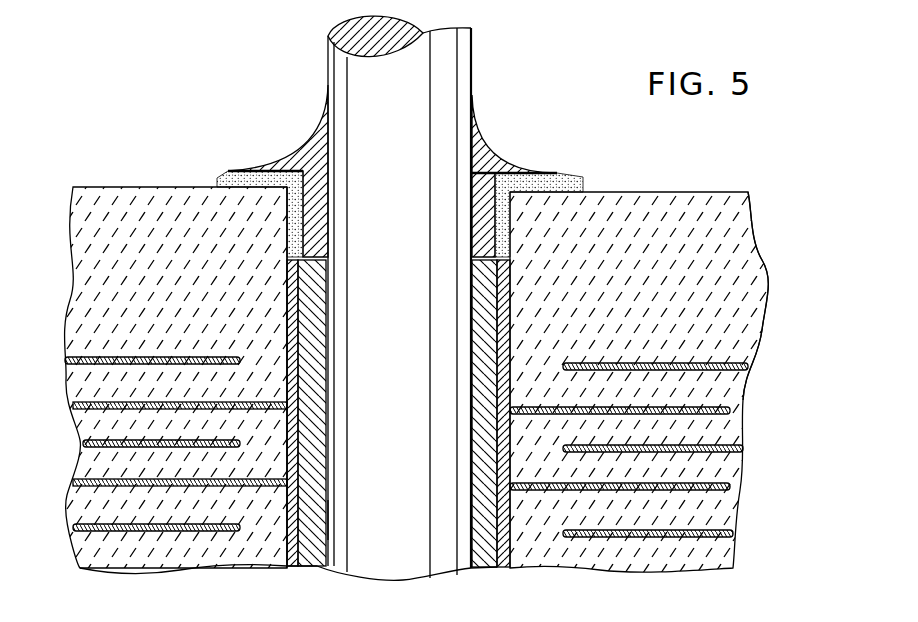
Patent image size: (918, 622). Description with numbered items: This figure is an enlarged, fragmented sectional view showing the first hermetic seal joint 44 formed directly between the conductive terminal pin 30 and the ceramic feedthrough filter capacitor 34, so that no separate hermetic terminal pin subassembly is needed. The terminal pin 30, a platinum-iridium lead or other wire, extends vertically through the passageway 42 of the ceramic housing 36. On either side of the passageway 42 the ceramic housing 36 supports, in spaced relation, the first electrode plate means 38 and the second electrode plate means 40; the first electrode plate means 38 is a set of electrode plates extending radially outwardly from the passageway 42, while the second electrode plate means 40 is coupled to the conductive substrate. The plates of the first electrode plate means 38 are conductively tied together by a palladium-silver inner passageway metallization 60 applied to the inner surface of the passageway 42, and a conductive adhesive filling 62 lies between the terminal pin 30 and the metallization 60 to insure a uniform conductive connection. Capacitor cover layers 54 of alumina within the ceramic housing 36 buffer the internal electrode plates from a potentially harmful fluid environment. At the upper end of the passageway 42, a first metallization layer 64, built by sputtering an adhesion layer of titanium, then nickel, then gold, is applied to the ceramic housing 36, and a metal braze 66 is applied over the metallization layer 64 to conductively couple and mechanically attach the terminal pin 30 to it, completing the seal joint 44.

The conductive terminal pin 30 is at (474, 47).
The ceramic feedthrough filter capacitor 34 is at (744, 189).
The ceramic housing 36 is at (763, 279).
The first electrode plate means 38 is at (268, 490).
The second electrode plate means 40 is at (748, 378).
The passageway 42 is at (331, 520).
The first hermetic seal joint 44 is at (258, 134).
The capacitor cover layers 54 is at (118, 200).
The inner passageway metallization 60 is at (298, 522).
The conductive adhesive filling 62 is at (327, 287).
The first metallization layer 64 is at (217, 178).
The metal braze 66 is at (289, 154).